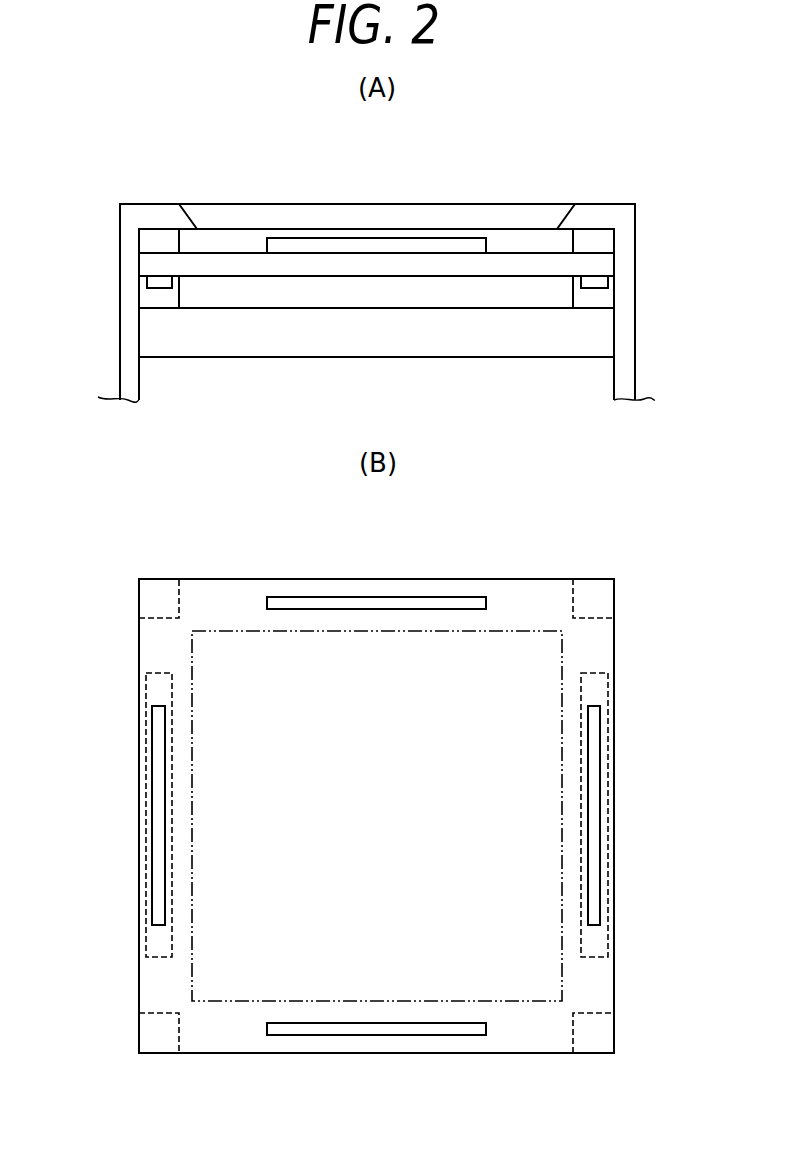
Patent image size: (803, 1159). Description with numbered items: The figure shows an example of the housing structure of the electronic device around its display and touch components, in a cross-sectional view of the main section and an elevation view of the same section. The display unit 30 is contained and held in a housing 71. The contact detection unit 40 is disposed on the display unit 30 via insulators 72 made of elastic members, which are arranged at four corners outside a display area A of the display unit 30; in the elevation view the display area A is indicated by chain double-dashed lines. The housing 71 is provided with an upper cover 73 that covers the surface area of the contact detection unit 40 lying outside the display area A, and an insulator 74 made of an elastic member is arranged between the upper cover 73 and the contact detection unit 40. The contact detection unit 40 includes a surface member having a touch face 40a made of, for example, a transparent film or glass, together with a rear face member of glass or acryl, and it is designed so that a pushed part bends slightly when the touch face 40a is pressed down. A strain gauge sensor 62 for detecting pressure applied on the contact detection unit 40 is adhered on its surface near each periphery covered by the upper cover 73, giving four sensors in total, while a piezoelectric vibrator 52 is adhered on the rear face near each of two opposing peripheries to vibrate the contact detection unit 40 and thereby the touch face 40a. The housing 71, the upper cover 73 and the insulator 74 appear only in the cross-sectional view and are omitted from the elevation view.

The display unit 30 is at (170, 332).
The contact detection unit 40 is at (215, 268).
The touch face 40a is at (517, 250).
The piezoelectric vibrator 52 is at (147, 277).
The strain gauge sensor 62 is at (363, 243).
The housing 71 is at (625, 340).
The insulator 72 is at (147, 297).
The upper cover 73 is at (585, 218).
The insulator 74 is at (604, 240).
The display area A is at (192, 652).